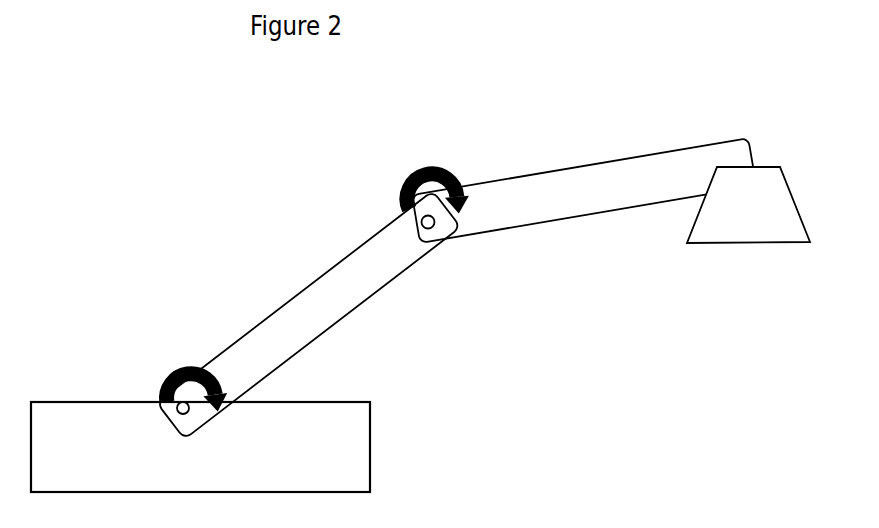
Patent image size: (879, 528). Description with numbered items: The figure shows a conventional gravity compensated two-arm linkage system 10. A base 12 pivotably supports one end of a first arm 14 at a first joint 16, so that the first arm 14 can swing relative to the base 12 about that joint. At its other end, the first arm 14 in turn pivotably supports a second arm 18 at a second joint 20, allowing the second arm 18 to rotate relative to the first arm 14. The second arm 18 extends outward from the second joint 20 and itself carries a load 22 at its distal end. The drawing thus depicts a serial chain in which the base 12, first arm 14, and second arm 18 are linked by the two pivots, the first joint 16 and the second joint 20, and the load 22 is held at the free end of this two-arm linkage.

The system 10 is at (172, 226).
The base 12 is at (98, 455).
The first arm 14 is at (322, 307).
The first joint 16 is at (163, 400).
The second arm 18 is at (578, 188).
The second joint 20 is at (412, 208).
The load 22 is at (758, 218).